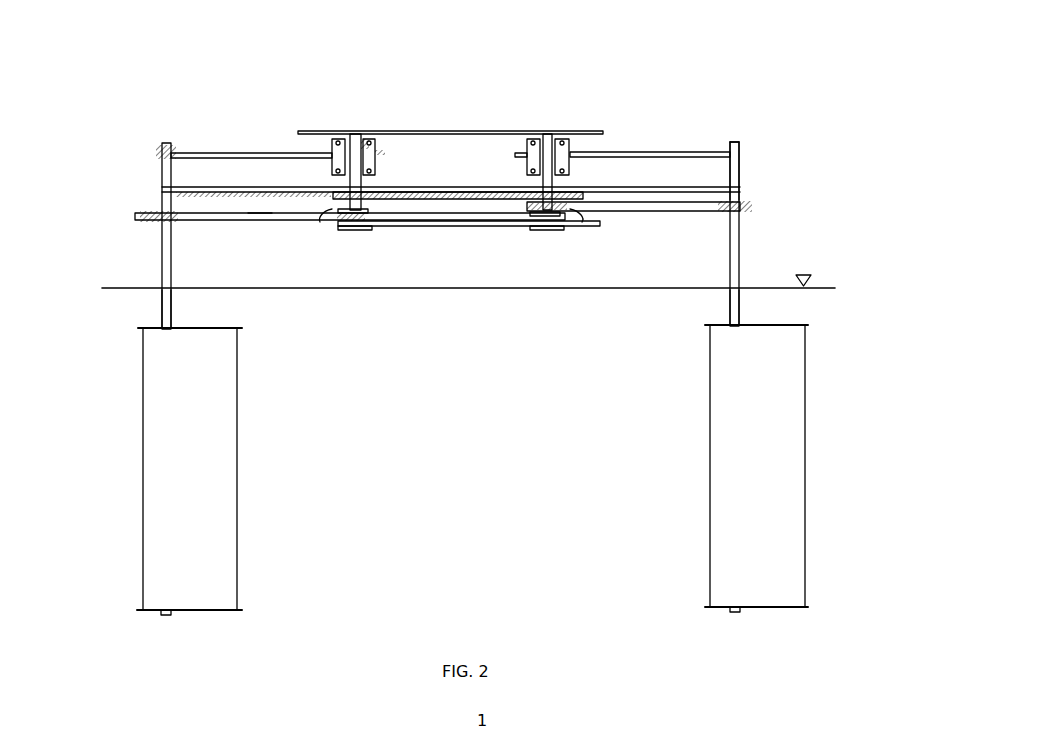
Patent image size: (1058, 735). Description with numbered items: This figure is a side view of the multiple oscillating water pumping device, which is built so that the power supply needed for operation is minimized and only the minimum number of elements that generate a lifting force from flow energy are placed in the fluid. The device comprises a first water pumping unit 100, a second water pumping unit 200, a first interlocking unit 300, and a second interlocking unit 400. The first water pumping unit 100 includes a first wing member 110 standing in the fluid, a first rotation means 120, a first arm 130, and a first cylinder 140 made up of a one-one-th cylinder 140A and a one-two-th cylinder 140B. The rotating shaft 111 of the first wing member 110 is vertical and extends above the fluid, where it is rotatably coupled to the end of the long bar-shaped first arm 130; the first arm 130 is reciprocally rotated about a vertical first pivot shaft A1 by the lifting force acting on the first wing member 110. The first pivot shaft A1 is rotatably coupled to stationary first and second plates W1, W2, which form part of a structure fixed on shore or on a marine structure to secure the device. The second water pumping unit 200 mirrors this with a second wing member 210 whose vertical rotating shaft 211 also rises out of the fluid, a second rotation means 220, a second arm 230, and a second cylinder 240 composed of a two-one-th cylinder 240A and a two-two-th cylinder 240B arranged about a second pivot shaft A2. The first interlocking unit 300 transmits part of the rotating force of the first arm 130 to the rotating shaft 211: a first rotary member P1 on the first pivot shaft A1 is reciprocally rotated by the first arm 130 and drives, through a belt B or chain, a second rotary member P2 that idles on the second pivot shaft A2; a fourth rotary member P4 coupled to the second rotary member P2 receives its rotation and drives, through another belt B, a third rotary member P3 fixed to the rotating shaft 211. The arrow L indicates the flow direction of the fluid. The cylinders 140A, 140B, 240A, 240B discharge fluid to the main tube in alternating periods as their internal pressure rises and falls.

The first water pumping unit 100 is at (185, 118).
The first wing member 110 is at (157, 539).
The rotating shaft 111 is at (165, 300).
The first rotation means 120 is at (160, 178).
The first arm 130 is at (248, 152).
The first cylinder 140 is at (356, 108).
The (1-1)th cylinder 140A is at (332, 130).
The (1-2)th cylinder 140B is at (378, 130).
The first pivot shaft A1 is at (352, 130).
The first plate W1 is at (450, 129).
The second plate W2 is at (462, 205).
The second water pumping unit 200 is at (714, 116).
The second wing member 210 is at (784, 468).
The rotating shaft 211 is at (742, 302).
The second rotation means 220 is at (745, 150).
The second arm 230 is at (655, 151).
The second cylinder 240 is at (549, 108).
The (2-1)th cylinder 240A is at (522, 130).
The (2-2)th cylinder 240B is at (571, 130).
The second pivot shaft A2 is at (548, 130).
The first interlocking unit 300 is at (664, 230).
The second interlocking unit 400 is at (290, 232).
The belt B is at (258, 222).
The (1-1)th rotary member P1 is at (320, 223).
The (1-2)th rotary member P2 is at (345, 228).
The (1-3)th rotary member P3 is at (150, 213).
The (1-4)th rotary member P4 is at (383, 222).
The longitudinal direction L is at (114, 481).